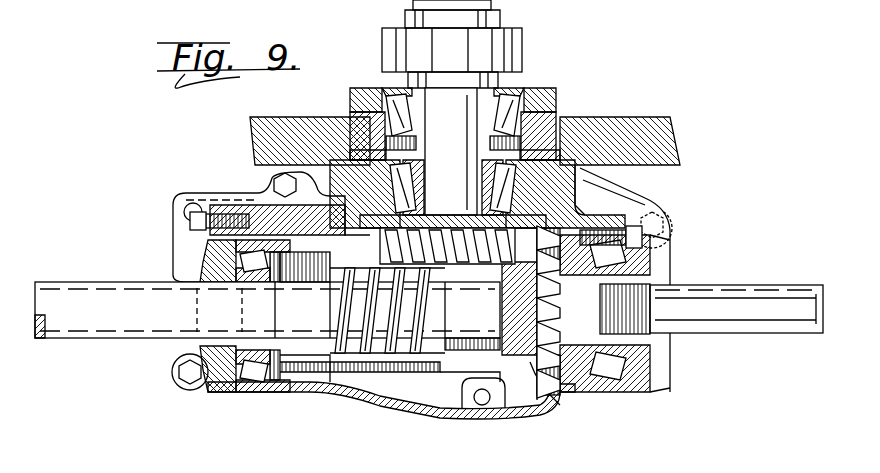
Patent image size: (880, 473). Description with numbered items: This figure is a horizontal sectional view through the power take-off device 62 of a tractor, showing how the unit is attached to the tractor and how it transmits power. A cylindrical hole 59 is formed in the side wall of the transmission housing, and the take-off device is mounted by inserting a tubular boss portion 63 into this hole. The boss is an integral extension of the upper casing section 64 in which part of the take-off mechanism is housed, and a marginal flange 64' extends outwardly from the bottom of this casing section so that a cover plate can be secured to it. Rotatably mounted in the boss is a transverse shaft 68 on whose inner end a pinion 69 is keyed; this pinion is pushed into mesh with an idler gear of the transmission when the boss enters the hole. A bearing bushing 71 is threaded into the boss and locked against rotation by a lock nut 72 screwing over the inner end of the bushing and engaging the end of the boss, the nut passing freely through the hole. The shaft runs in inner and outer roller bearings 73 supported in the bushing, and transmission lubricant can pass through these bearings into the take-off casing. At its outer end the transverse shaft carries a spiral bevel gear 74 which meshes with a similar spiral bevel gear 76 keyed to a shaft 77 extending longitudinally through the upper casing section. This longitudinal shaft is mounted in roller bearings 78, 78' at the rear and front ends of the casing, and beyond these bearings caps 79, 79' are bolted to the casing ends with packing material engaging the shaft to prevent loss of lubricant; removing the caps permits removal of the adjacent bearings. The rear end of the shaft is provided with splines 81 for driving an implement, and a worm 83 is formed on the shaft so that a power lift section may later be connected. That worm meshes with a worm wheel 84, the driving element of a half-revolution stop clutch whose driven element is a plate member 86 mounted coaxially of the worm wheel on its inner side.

The cylindrical hole 59 is at (565, 128).
The power take-off device 62 is at (354, 414).
The tubular boss portion 63 is at (542, 130).
The upper casing section 64 is at (452, 412).
The marginal flange 64' is at (341, 403).
The transverse shaft 68 is at (470, 98).
The pinion 69 is at (505, 30).
The bearing bushing 71 is at (390, 94).
The lock nut 72 is at (352, 96).
The roller bearings 73 is at (498, 116).
The spiral bevel gear 74 is at (446, 228).
The spiral bevel gear 76 is at (548, 410).
The shaft 77 is at (476, 340).
The roller bearing 78 is at (605, 325).
The roller bearing 78' is at (240, 346).
The cap 79 is at (650, 315).
The cap 79' is at (204, 334).
The splines 81 is at (750, 330).
The worm 83 is at (388, 332).
The worm wheel 84 is at (462, 338).
The plate member 86 is at (333, 247).